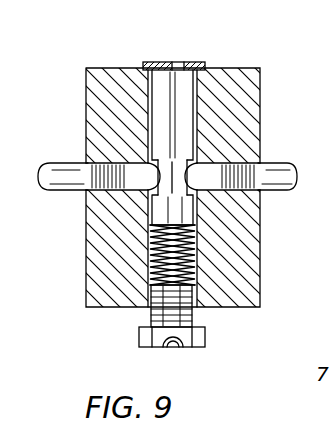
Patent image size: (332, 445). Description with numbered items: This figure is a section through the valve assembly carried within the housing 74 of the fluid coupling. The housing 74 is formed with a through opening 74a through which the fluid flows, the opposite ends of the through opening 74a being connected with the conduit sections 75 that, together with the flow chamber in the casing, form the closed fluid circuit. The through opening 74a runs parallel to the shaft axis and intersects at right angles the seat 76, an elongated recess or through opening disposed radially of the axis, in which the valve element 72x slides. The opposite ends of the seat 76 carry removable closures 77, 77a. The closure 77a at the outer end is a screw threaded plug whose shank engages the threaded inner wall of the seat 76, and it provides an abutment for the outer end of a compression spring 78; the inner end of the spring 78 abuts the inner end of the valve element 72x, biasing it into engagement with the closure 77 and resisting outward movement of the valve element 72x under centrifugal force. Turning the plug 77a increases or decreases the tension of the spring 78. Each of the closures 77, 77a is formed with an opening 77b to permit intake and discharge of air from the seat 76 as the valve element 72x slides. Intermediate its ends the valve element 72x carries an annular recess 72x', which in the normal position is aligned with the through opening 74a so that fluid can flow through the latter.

The housing 74 is at (243, 88).
The through opening 74a is at (245, 148).
The valve seat 76 is at (204, 92).
The valve element 72x is at (108, 147).
The annular recess 72x' is at (102, 215).
The conduit sections 75 is at (58, 183).
The closure 77 is at (200, 62).
The opening 77b is at (177, 62).
The closure 77a is at (196, 316).
The compression spring 78 is at (153, 268).